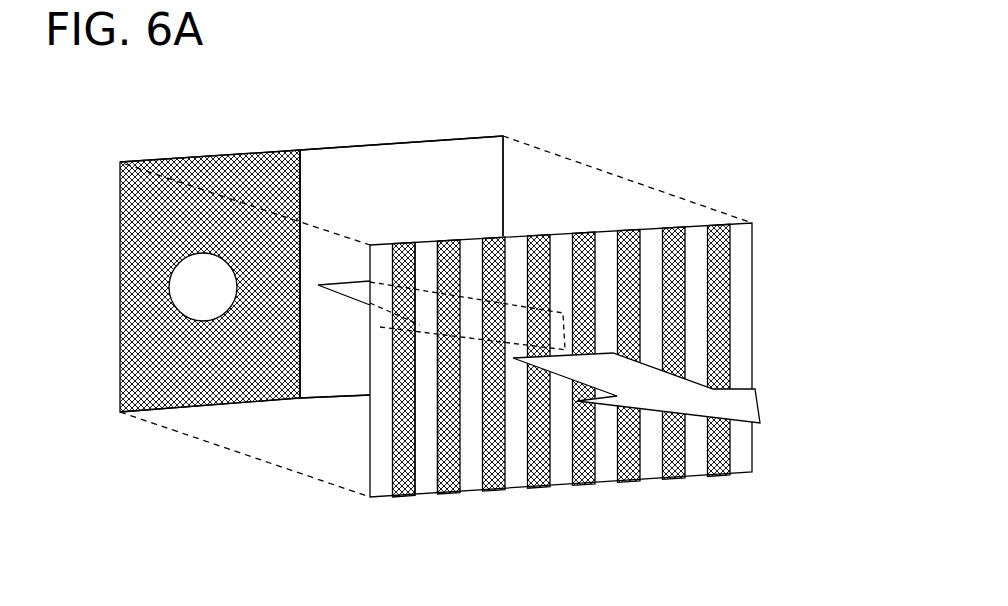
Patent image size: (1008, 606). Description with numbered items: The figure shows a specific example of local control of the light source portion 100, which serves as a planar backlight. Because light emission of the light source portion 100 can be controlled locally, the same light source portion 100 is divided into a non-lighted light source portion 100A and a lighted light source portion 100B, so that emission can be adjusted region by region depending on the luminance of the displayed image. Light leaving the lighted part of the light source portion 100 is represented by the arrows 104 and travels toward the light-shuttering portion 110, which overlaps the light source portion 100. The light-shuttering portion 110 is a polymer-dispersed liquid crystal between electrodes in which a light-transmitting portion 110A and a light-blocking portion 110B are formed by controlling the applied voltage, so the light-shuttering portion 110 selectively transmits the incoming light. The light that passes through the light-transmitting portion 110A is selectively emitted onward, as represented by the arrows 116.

The light source portion 100 is at (525, 127).
The non-lighted light source portion 100A is at (393, 142).
The lighted light source portion 100B is at (237, 152).
The arrows representing light 104 is at (345, 300).
The light-shuttering portion 110 is at (619, 340).
The light-transmitting portion 110A is at (423, 498).
The light-blocking portion 110B is at (497, 489).
The arrows representing light 116 is at (662, 400).